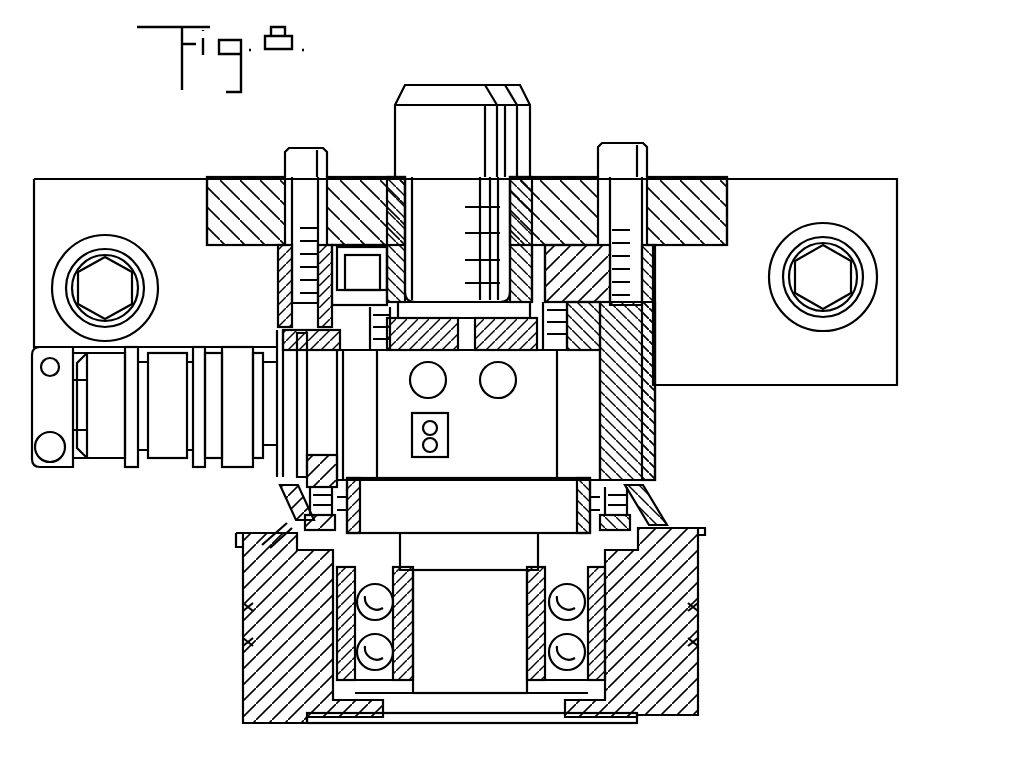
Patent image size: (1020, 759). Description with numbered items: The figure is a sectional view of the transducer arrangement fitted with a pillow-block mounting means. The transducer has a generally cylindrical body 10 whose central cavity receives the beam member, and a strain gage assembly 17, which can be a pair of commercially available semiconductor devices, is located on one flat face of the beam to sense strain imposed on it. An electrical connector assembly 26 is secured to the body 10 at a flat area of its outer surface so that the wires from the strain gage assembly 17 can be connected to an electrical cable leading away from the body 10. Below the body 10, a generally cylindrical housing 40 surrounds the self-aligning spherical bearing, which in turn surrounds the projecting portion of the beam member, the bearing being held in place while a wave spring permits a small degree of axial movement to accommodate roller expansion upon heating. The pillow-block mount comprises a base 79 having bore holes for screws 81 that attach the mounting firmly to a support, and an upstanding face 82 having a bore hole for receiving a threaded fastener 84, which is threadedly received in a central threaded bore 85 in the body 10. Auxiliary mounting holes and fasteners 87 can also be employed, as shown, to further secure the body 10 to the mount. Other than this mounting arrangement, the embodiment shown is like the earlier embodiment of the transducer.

The body 10 is at (660, 446).
The strain gage assembly 17 is at (464, 442).
The electrical connector assembly 26 is at (177, 484).
The housing 40 is at (229, 633).
The base 79 is at (808, 182).
The screws 81 is at (125, 288).
The upstanding face 82 is at (690, 183).
The threaded fastener 84 is at (553, 108).
The central threaded bore 85 is at (479, 239).
The fasteners 87 is at (276, 183).